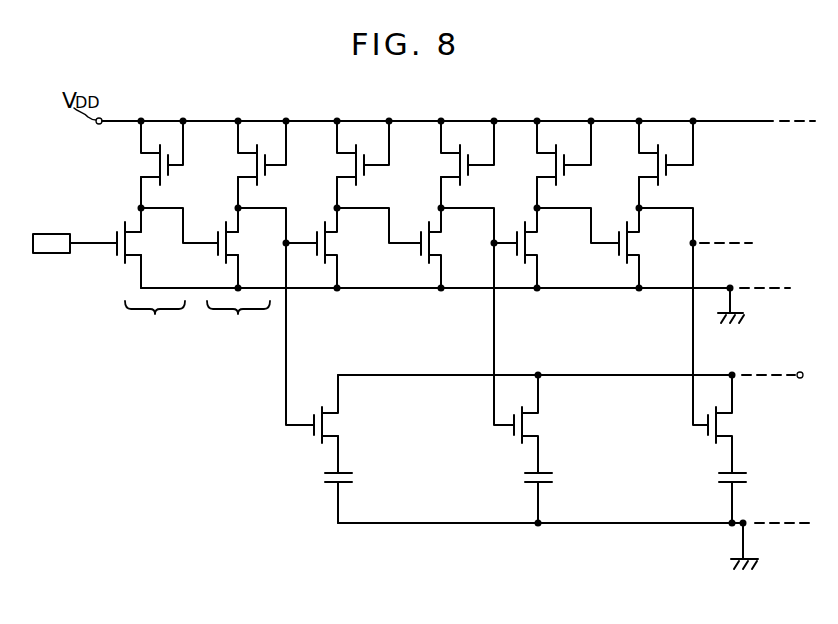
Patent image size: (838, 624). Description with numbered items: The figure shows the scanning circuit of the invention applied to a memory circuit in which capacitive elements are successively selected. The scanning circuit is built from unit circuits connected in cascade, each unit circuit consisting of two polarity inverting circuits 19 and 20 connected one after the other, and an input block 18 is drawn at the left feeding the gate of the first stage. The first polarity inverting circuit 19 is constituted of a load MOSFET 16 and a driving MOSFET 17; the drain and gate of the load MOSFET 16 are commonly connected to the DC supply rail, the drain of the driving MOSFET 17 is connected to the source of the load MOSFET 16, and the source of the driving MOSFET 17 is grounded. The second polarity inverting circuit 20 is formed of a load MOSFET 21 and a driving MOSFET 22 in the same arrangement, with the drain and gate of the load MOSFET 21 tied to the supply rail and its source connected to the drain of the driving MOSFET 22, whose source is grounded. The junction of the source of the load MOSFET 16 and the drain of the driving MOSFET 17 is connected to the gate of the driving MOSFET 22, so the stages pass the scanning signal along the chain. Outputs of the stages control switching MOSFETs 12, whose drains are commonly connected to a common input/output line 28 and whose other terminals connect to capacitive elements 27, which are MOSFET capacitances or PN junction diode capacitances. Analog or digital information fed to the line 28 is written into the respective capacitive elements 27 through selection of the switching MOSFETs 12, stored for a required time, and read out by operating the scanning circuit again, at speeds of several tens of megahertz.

The switching MOSFET 12 is at (325, 427).
The load MOSFET 16 is at (147, 166).
The driving MOSFET 17 is at (125, 231).
The input signal source 18 is at (52, 234).
The polarity inverting circuit 19 is at (155, 322).
The polarity inverting circuit 20 is at (238, 322).
The load MOSFET 21 is at (253, 166).
The driving MOSFET 22 is at (220, 260).
The capacitive element 27 is at (353, 478).
The common input/output line 28 is at (754, 372).